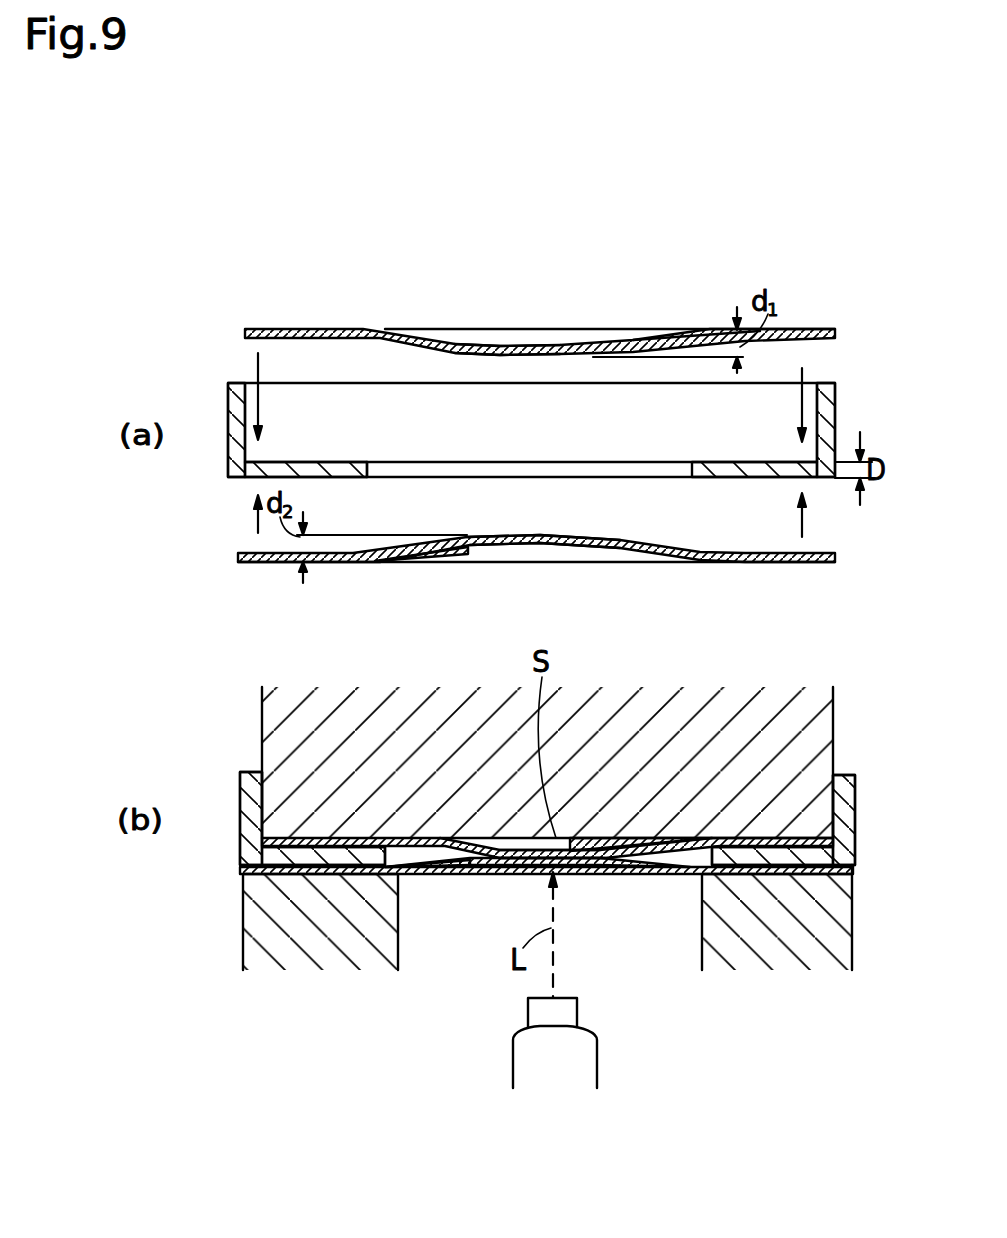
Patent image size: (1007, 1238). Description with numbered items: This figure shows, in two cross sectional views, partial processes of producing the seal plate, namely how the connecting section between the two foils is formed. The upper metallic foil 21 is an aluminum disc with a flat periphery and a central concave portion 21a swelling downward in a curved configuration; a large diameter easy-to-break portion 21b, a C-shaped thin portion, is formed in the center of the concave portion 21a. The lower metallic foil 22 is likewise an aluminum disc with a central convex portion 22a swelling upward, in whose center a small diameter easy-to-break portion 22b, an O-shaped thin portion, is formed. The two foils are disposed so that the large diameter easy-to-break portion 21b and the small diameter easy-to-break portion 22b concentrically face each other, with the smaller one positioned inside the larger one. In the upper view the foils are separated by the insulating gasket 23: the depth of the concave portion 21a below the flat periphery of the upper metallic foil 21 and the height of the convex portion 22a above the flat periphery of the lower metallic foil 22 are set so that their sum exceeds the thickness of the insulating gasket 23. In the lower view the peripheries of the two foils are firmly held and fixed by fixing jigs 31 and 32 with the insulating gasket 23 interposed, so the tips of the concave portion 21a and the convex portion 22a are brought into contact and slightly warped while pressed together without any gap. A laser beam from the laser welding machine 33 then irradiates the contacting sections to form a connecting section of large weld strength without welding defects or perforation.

The upper metallic foil 21 is at (312, 328).
The concave portion 21a is at (553, 347).
The large diameter easy-to-break portion 21b is at (457, 343).
The lower metallic foil 22 is at (748, 563).
The convex portion 22a is at (533, 536).
The small diameter easy-to-break portion 22b is at (596, 545).
The insulating gasket 23 is at (349, 461).
The fixing jig 31 is at (818, 747).
The fixing jig 32 is at (830, 913).
The laser welding machine 33 is at (597, 1063).